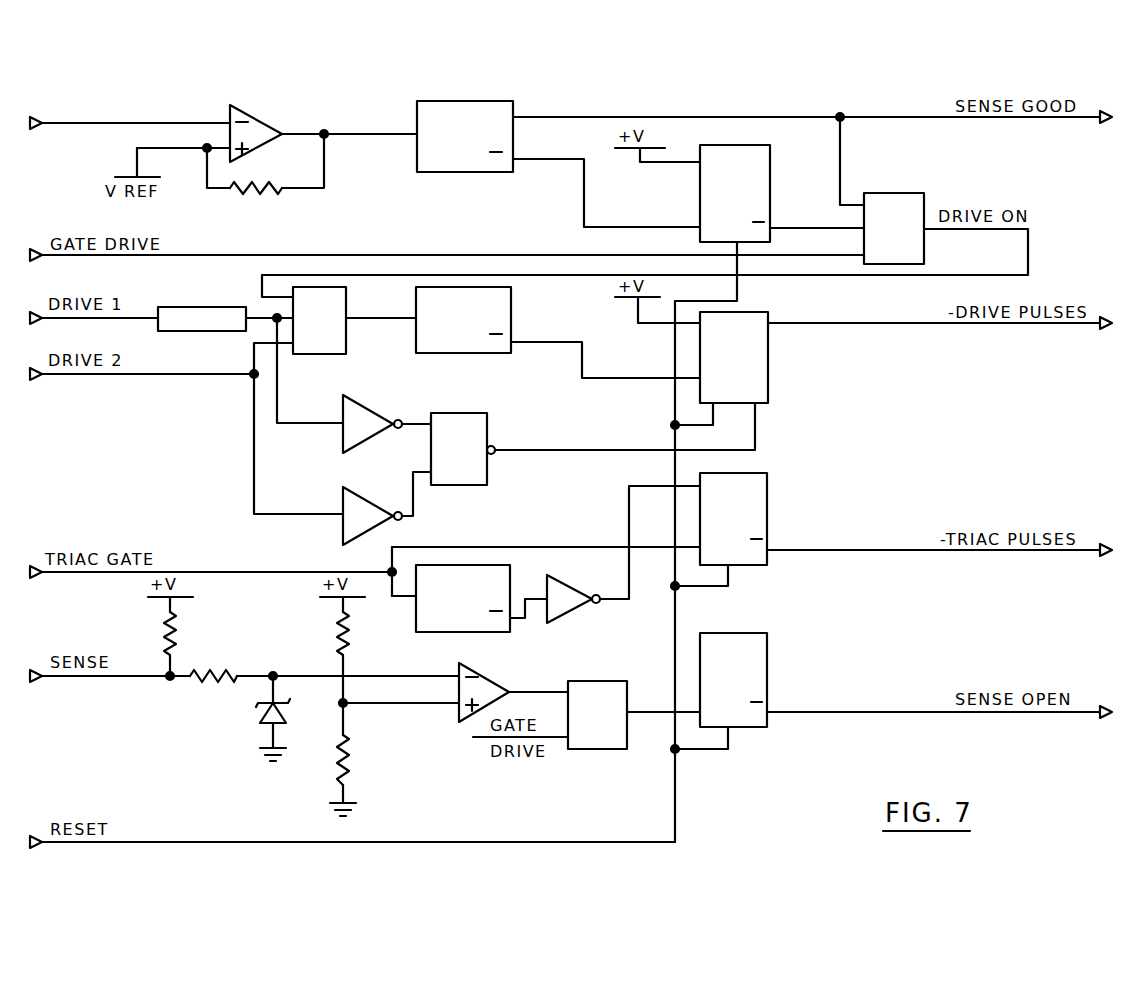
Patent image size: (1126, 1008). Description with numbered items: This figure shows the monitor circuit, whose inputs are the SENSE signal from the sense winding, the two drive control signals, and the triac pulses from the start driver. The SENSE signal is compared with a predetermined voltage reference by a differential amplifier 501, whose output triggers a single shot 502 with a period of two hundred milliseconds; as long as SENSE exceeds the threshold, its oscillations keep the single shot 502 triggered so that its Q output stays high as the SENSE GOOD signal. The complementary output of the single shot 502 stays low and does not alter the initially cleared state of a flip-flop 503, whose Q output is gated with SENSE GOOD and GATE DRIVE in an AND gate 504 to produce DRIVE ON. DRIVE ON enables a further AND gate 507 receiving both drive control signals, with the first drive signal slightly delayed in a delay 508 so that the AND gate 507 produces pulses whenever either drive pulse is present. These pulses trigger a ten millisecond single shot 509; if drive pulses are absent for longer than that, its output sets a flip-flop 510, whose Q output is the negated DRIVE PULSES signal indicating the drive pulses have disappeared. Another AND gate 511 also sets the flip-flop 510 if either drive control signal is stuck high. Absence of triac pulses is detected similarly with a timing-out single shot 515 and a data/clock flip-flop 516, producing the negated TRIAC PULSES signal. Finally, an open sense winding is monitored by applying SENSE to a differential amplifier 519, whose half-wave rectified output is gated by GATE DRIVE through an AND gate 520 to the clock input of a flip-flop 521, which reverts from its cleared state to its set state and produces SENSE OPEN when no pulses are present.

The differential amplifier 501 is at (245, 110).
The single shot 502 is at (417, 112).
The flip-flop 503 is at (772, 178).
The AND gate 504 is at (887, 193).
The AND gate 507 is at (347, 303).
The delay 508 is at (236, 306).
The single shot 509 is at (428, 354).
The flip-flop 510 is at (755, 312).
The AND gate 511 is at (488, 426).
The single shot 515 is at (425, 633).
The data/clock flip-flop 516 is at (770, 503).
The differential amplifier 519 is at (480, 669).
The AND gate 520 is at (590, 681).
The flip-flop 521 is at (770, 657).